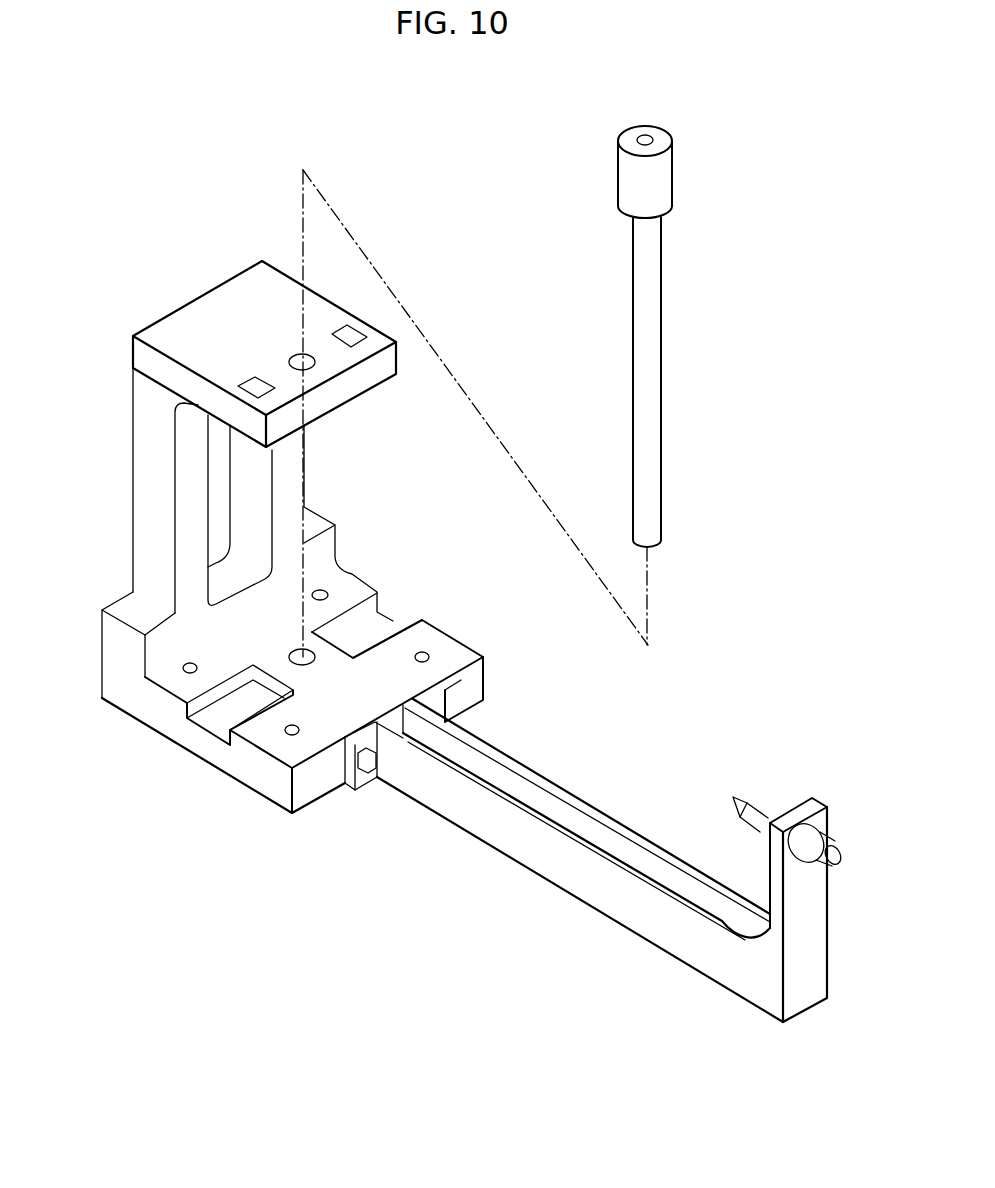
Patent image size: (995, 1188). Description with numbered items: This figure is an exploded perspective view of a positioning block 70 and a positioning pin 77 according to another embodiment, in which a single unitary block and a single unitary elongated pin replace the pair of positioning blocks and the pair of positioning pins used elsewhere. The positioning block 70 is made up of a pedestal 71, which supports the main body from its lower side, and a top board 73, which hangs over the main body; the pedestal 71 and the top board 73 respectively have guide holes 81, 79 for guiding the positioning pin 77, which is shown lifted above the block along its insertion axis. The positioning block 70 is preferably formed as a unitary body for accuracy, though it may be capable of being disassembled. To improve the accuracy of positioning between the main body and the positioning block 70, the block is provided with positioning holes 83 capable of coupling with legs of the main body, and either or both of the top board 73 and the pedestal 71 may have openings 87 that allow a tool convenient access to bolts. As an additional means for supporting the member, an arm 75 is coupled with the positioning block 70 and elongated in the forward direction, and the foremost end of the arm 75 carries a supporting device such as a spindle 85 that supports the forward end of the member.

The positioning block 70 is at (188, 172).
The pedestal 71 is at (235, 762).
The top board 73 is at (205, 325).
The arm 75 is at (560, 867).
The positioning pin 77 is at (674, 366).
The guide hole 79 is at (317, 360).
The guide hole 81 is at (313, 653).
The positioning holes 83 is at (185, 668).
The spindle 85 is at (748, 795).
The openings 87 is at (352, 336).